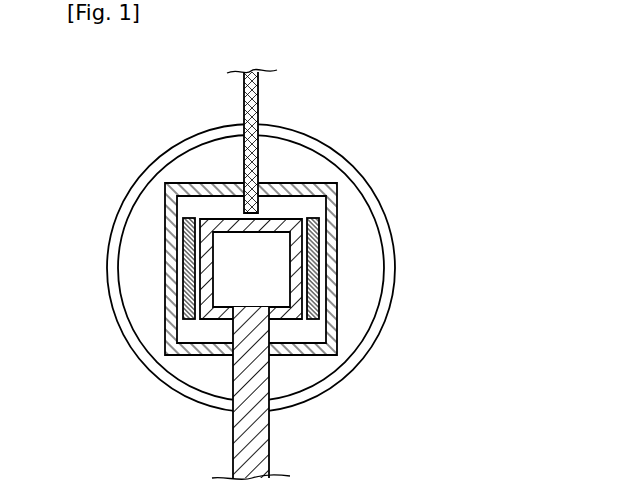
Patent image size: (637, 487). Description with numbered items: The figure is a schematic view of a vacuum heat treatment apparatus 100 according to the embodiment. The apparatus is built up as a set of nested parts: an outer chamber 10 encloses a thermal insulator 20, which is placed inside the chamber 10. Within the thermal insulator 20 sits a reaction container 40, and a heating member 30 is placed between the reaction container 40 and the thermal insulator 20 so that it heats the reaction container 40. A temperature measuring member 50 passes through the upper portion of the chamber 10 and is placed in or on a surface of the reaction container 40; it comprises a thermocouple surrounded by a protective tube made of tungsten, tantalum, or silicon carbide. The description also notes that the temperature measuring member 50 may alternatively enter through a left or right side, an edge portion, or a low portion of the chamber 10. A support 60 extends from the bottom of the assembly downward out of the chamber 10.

The sensor assembly 100 is at (107, 70).
The chamber 10 is at (353, 173).
The thermal insulator 20 is at (337, 262).
The heating member 30 is at (319, 230).
The reaction container 40 is at (297, 291).
The temperature measuring member 50 is at (258, 97).
The support stem 60 is at (269, 386).